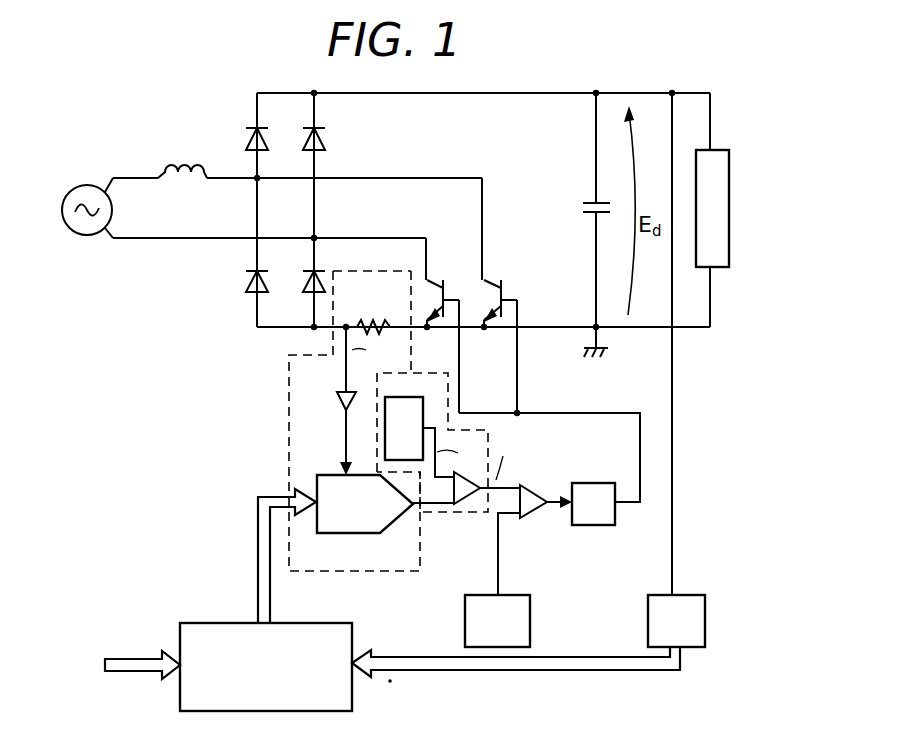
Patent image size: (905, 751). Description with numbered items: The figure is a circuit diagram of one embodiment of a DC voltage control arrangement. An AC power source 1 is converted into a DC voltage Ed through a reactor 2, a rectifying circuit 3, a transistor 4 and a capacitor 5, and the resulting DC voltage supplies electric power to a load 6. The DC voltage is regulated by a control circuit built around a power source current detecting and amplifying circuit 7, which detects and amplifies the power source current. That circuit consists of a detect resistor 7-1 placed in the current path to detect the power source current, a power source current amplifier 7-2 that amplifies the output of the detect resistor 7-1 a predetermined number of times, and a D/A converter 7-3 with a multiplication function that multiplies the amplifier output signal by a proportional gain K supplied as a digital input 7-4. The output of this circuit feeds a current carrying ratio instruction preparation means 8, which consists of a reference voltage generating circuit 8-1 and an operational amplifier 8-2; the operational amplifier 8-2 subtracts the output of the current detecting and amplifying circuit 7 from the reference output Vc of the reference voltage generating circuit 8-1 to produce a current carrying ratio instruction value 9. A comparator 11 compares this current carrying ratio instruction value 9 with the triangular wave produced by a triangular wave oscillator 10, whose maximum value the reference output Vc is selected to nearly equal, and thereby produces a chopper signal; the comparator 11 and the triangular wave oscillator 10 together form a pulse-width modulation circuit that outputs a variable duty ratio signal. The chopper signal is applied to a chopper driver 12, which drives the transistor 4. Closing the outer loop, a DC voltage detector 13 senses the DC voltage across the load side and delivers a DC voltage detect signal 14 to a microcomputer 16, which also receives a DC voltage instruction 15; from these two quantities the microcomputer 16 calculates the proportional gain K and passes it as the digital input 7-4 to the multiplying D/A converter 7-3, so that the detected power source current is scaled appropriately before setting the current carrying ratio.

The AC power source 1 is at (88, 185).
The reactor 2 is at (179, 170).
The rectifying circuit 3 is at (286, 90).
The transistor 4 is at (493, 270).
The capacitor 5 is at (583, 207).
The load 6 is at (731, 173).
The power source current detecting and amplifying circuit 7 is at (287, 420).
The detect resistor 7-1 is at (371, 324).
The power source current amplifier 7-2 is at (335, 400).
The D/A converter with a multiplication function 7-3 is at (361, 534).
The digital input 7-4 is at (257, 559).
The current carrying ratio instruction preparation means 8 is at (477, 513).
The reference voltage generating circuit 8-1 is at (425, 410).
The operational amplifier 8-2 is at (460, 508).
The current carrying ratio instruction value 9 is at (512, 480).
The triangular wave oscillator 10 is at (532, 614).
The comparator 11 is at (540, 505).
The chopper driver 12 is at (595, 482).
The DC voltage detector 13 is at (707, 614).
The DC voltage detect signal 14 is at (418, 656).
The DC voltage instruction 15 is at (128, 654).
The microcomputer 16 is at (222, 622).